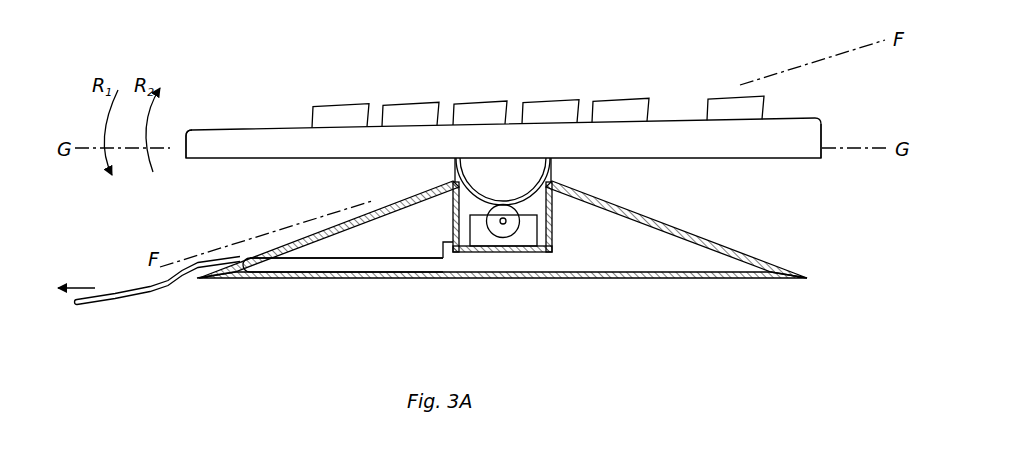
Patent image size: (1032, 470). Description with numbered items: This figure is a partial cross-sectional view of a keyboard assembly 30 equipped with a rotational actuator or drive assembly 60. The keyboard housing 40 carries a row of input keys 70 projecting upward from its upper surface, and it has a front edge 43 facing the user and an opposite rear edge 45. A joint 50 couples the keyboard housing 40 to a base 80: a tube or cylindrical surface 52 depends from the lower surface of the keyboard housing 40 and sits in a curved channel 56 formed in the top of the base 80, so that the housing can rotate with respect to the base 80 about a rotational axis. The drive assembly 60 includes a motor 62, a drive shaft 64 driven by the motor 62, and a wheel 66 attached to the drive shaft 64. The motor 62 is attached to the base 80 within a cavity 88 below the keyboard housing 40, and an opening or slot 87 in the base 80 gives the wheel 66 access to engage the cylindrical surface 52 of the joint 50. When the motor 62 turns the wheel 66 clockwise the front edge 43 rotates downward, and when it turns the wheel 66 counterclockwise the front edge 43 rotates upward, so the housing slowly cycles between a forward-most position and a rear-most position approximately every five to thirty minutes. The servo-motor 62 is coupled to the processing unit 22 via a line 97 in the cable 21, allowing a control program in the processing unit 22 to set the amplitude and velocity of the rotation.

The keyboard assembly 30 is at (515, 58).
The keyboard housing 40 is at (790, 120).
The front edge 43 is at (186, 147).
The rear edge 45 is at (823, 153).
The input keys 70 is at (410, 104).
The joint 50 is at (460, 163).
The cylindrical surface 52 is at (548, 165).
The slot 87 is at (482, 200).
The drive assembly 60 is at (553, 242).
The curved channel 56 is at (548, 198).
The motor 62 is at (468, 228).
The wheel 66 is at (487, 238).
The drive shaft 64 is at (503, 225).
The base 80 is at (678, 260).
The cavity 88 is at (348, 274).
The line 97 is at (317, 260).
The cable 21 is at (127, 305).
The processing unit 22 is at (79, 275).